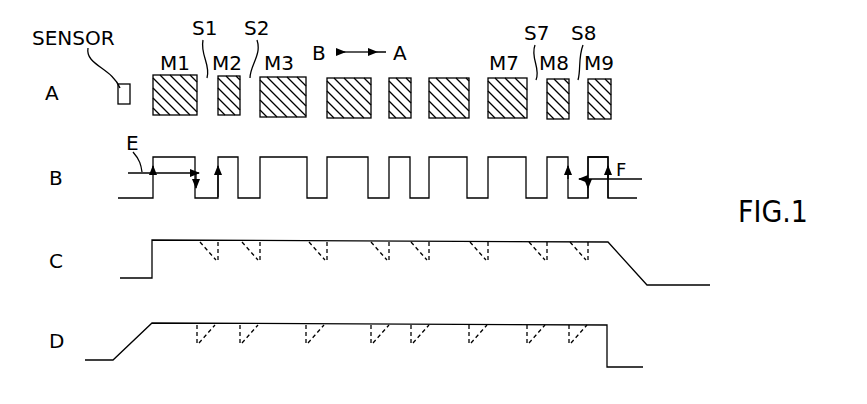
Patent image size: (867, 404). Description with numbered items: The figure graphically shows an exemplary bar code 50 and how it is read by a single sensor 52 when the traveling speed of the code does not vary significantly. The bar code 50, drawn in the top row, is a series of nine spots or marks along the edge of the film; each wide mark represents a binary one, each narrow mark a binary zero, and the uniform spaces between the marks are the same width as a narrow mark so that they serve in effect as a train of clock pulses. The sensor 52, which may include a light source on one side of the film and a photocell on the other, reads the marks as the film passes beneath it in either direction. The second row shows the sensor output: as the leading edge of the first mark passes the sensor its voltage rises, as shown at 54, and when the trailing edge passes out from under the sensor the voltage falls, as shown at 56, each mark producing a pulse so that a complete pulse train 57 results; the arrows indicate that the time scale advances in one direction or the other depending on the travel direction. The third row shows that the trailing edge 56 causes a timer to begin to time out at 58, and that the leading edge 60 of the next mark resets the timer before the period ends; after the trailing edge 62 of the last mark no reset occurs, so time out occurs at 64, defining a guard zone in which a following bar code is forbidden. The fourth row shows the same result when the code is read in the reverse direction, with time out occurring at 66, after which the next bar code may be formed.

The bar code 50 is at (618, 97).
The sensor 52 is at (118, 97).
The rising output voltage 54 is at (153, 190).
The trailing edge 56 is at (195, 186).
The pulse train 57 is at (634, 189).
The timer start 58 is at (206, 251).
The leading edge 60 is at (219, 186).
The trailing edge of last mark 62 is at (607, 193).
The time out 64 is at (653, 279).
The time out 66 is at (112, 352).